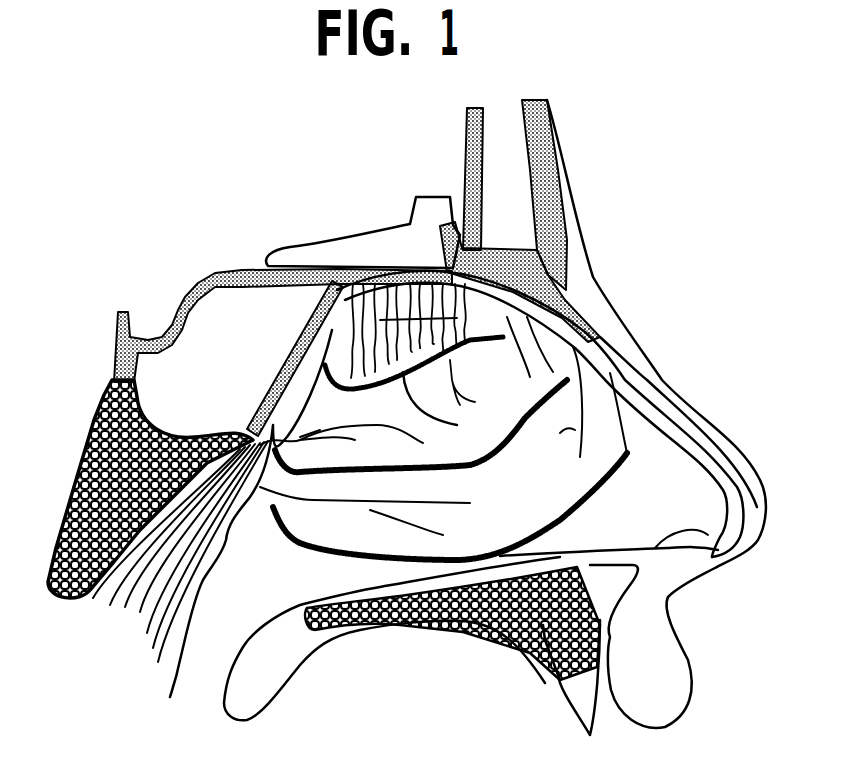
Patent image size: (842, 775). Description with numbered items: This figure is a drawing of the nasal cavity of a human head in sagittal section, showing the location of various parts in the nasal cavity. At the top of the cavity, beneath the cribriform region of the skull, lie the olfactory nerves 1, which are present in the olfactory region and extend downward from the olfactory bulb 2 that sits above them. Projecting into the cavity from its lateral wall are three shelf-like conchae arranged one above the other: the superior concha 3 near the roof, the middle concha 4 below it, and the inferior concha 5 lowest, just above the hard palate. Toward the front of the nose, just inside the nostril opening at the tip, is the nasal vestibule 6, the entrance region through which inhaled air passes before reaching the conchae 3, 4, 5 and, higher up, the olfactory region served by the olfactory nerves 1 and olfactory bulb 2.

The olfactory nerves 1 is at (358, 368).
The olfactory bulb 2 is at (373, 245).
The superior concha 3 is at (452, 329).
The middle concha 4 is at (478, 413).
The inferior concha 5 is at (541, 494).
The nasal vestibule 6 is at (667, 523).